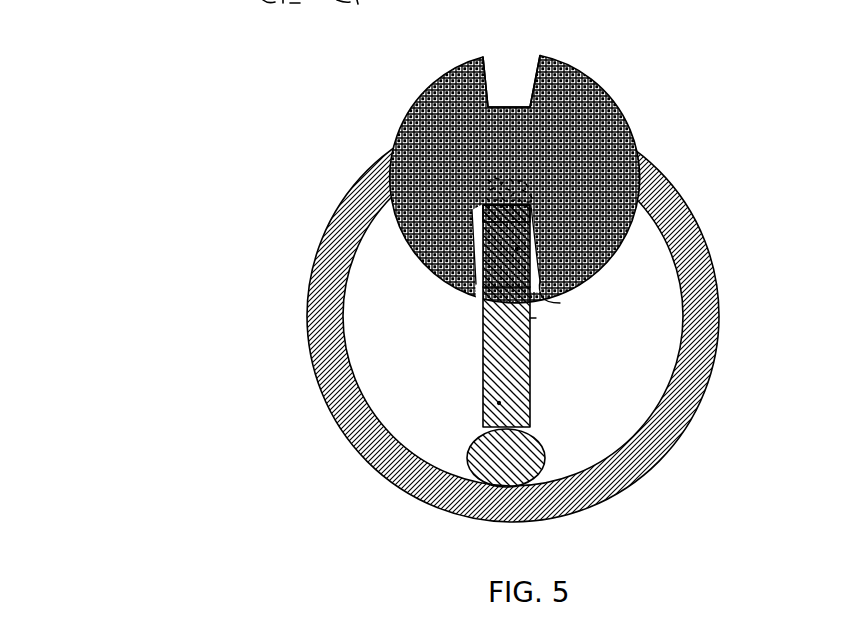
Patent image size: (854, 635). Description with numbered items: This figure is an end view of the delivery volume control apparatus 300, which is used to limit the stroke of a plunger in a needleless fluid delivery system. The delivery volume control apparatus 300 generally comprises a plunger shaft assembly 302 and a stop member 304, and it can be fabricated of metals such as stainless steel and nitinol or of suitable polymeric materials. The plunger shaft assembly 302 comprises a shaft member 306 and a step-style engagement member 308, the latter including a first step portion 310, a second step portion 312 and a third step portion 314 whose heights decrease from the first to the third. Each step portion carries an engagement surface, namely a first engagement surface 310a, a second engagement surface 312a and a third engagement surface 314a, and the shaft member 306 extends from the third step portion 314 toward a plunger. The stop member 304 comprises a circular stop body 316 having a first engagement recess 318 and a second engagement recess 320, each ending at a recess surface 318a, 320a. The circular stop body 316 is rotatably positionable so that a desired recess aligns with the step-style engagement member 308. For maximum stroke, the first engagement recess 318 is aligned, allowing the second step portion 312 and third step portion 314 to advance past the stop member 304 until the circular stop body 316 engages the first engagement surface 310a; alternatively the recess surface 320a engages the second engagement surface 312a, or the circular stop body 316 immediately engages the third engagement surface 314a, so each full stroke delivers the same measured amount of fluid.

The delivery volume control apparatus 300 is at (181, 354).
The plunger shaft assembly 302 is at (482, 392).
The stop member 304 is at (603, 132).
The shaft member 306 is at (523, 457).
The step-style engagement member 308 is at (530, 318).
The first step portion 310 is at (530, 217).
The first engagement surface 310a is at (483, 218).
The second step portion 312 is at (530, 265).
The second engagement surface 312a is at (520, 250).
The third step portion 314 is at (530, 392).
The third engagement surface 314a is at (500, 403).
The circular stop body 316 is at (572, 90).
The first engagement recess 318 is at (560, 303).
The recess surface 318a is at (488, 200).
The second engagement recess 320 is at (487, 83).
The recess surface 320a is at (515, 95).